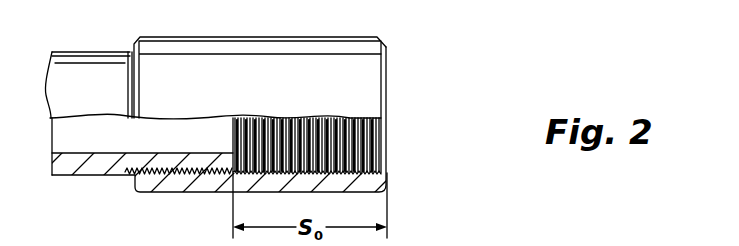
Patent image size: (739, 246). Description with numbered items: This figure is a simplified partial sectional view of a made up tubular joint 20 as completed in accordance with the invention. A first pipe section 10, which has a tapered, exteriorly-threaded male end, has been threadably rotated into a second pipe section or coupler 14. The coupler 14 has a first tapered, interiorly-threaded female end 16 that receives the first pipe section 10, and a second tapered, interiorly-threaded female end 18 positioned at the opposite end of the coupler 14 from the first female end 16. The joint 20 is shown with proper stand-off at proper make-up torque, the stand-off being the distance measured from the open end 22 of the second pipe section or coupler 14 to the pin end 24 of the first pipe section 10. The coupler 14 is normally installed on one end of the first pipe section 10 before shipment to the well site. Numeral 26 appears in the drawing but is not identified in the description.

The first pipe section 10 is at (78, 47).
The second pipe section or coupler 14 is at (167, 37).
The first tapered, interiorly-threaded female end 16 is at (187, 162).
The second tapered, interiorly-threaded female end 18 is at (388, 158).
The made up tubular joint 20 is at (418, 80).
The open end 22 is at (387, 103).
The pin end 24 is at (233, 132).
The gap 26 is at (459, 240).